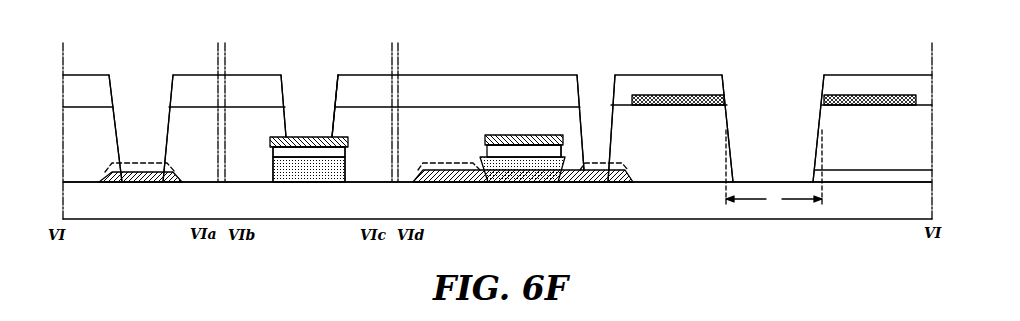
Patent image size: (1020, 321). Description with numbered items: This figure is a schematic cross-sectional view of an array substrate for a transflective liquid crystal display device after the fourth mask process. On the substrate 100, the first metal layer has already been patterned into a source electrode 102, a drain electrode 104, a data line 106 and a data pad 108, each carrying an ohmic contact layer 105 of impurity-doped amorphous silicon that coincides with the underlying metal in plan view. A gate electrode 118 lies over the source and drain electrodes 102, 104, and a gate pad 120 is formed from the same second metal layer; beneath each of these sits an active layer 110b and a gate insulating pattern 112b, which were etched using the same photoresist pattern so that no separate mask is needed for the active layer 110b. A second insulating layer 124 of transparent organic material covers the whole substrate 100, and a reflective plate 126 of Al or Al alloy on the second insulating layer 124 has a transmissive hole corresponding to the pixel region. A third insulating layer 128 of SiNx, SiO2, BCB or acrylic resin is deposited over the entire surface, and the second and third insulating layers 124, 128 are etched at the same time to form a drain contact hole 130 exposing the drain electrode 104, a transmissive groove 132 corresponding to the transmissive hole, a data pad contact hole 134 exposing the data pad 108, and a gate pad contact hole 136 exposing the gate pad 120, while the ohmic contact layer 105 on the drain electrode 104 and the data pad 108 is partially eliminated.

The substrate 100 is at (461, 206).
The source electrode 102 is at (478, 238).
The drain electrode 104 is at (598, 184).
The ohmic contact layer 105 is at (141, 168).
The data line 106 is at (432, 160).
The data pad 108 is at (147, 185).
The active layer 110b is at (338, 172).
The gate insulating pattern 112b is at (306, 152).
The gate electrode 118 is at (540, 135).
The gate pad 120 is at (280, 148).
The second insulating layer 124 is at (203, 162).
The reflective plate 126 is at (678, 95).
The third insulating layer 128 is at (200, 92).
The drain contact hole 130 is at (594, 80).
The transmissive groove 132 is at (765, 88).
The data pad contact hole 134 is at (134, 80).
The gate pad contact hole 136 is at (307, 80).